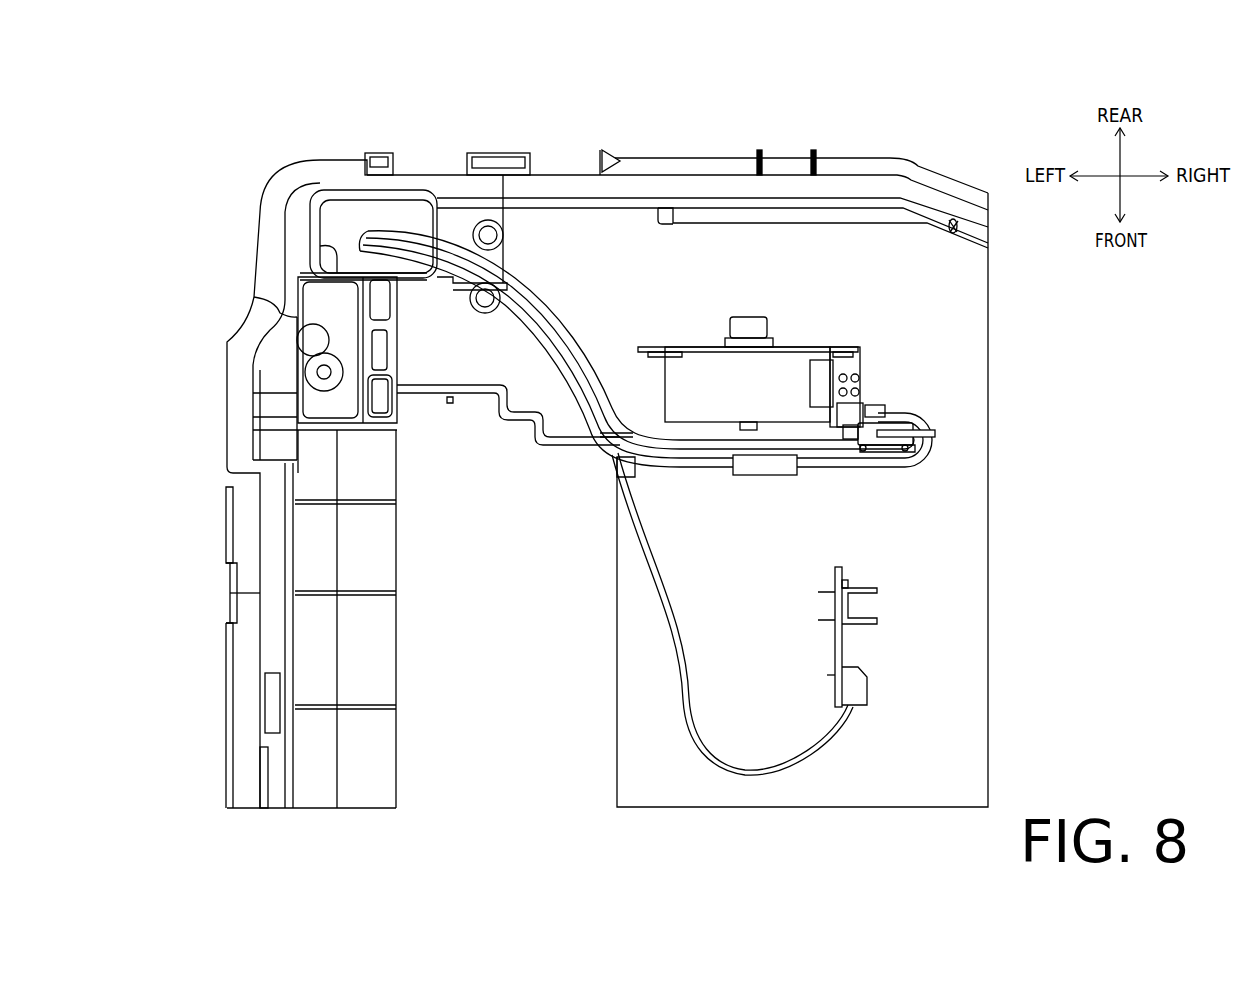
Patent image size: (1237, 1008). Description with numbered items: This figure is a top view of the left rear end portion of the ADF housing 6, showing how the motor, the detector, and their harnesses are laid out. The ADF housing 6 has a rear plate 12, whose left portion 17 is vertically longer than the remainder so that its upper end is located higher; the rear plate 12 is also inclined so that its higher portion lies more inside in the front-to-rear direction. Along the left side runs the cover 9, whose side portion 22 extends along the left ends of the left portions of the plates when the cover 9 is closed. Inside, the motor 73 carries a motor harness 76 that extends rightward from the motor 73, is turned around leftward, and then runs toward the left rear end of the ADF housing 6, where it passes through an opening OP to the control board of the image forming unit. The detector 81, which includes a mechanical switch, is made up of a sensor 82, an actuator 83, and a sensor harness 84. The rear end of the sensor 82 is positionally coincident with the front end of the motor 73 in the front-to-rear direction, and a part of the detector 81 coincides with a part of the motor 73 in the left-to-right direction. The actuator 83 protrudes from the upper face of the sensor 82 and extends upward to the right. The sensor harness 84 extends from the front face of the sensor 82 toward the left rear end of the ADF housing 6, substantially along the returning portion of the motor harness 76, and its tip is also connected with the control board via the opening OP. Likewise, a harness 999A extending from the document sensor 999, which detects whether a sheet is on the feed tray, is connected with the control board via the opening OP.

The ADF housing 6 is at (764, 518).
The cover 9 is at (225, 533).
The rear plate 12 is at (848, 172).
The left portion 17 is at (717, 183).
The side portion 22 is at (225, 733).
The motor 73 is at (707, 363).
The motor harness 76 is at (747, 478).
The detector 81 is at (890, 452).
The sensor 82 is at (893, 427).
The actuator 83 is at (933, 413).
The sensor harness 84 is at (735, 456).
The document sensor 999 is at (848, 597).
The harness 999A is at (817, 765).
The opening OP is at (387, 210).